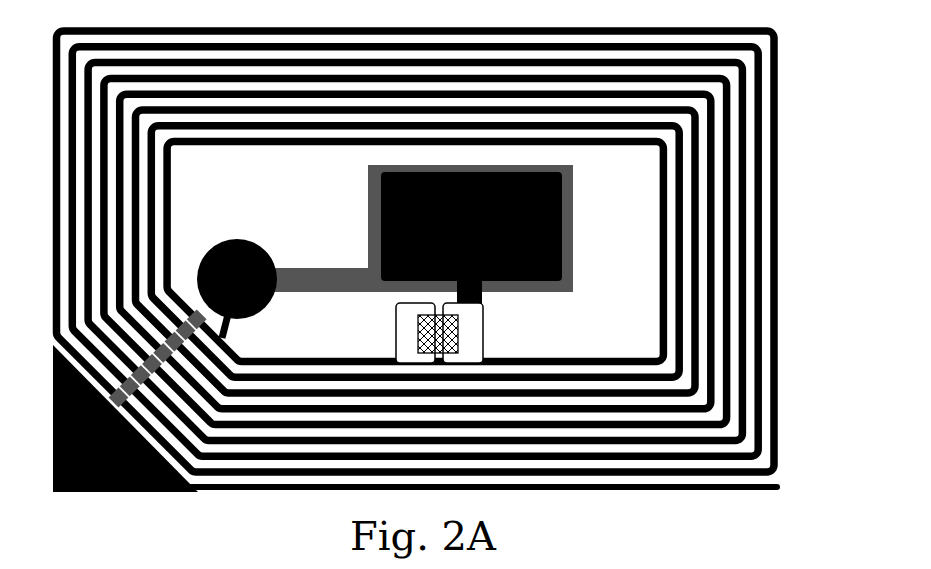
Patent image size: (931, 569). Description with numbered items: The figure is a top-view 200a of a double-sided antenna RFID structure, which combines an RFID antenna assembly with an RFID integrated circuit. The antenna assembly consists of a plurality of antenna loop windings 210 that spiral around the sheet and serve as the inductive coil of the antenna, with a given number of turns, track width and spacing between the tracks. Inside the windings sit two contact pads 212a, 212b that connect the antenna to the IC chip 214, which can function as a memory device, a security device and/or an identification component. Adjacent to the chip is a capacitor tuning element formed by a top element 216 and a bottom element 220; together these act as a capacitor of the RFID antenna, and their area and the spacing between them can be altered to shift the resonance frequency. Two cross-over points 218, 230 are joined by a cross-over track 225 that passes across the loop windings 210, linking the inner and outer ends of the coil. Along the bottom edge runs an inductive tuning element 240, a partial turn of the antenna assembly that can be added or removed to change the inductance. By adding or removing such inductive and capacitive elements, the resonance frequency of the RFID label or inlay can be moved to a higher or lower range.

The top-view 200a is at (450, 260).
The antenna loop windings 210 is at (790, 251).
The contact pad 212a is at (483, 347).
The contact pad 212b is at (398, 337).
The IC chip 214 is at (458, 325).
The top element 216 is at (380, 228).
The cross-over point 218 is at (222, 240).
The bottom element 220 is at (368, 185).
The cross-over track 225 is at (122, 383).
The cross-over point 230 is at (133, 492).
The inductive tuning element 240 is at (707, 492).